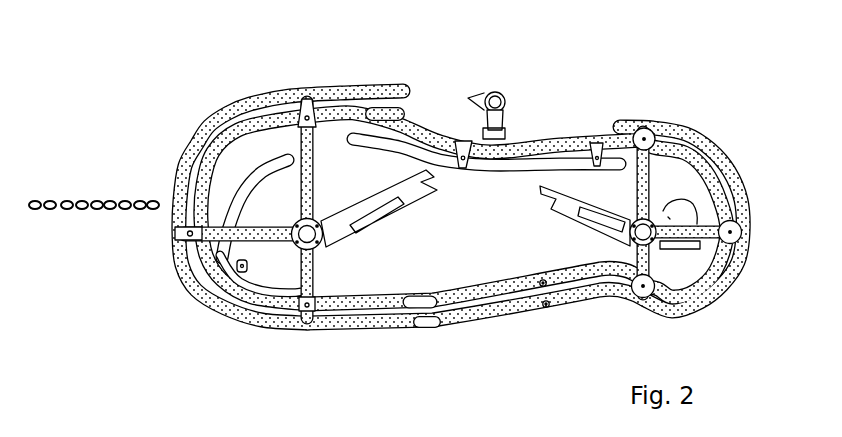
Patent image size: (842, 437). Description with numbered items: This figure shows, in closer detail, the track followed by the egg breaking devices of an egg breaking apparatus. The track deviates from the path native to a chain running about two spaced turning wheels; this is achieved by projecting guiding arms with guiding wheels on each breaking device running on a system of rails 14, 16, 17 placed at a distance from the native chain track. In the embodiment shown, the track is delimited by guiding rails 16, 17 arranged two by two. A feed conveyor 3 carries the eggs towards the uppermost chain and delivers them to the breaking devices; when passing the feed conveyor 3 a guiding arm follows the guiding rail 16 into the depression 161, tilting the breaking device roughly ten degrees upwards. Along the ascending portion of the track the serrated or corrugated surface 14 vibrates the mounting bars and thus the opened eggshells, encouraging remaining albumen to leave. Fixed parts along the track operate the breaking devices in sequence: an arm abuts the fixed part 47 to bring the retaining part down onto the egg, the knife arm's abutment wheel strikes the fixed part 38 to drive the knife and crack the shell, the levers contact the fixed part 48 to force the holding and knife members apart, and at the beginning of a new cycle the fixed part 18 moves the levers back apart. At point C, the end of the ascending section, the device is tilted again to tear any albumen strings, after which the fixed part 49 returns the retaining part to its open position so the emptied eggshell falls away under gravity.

The feed conveyor 3 is at (80, 201).
The serrated or corrugated surface 14 is at (481, 292).
The guiding rail 16 is at (193, 117).
The guiding rail 17 is at (237, 115).
The fixed part 18 is at (508, 128).
The fixed part 38 is at (222, 199).
The fixed part 47 is at (217, 253).
The fixed part 48 is at (292, 331).
The fixed part 49 is at (674, 208).
The depression 161 is at (175, 210).
The point C is at (596, 310).